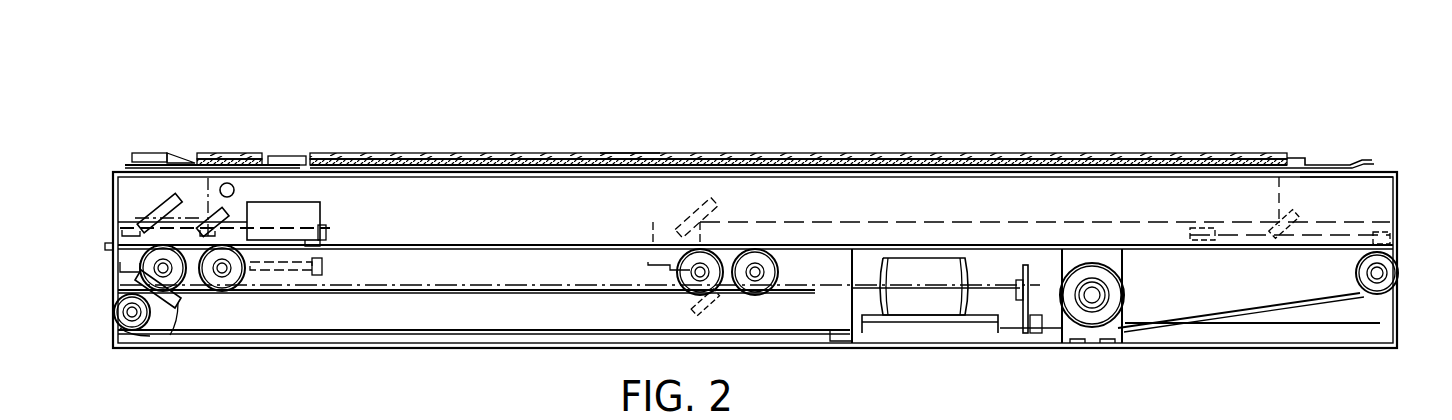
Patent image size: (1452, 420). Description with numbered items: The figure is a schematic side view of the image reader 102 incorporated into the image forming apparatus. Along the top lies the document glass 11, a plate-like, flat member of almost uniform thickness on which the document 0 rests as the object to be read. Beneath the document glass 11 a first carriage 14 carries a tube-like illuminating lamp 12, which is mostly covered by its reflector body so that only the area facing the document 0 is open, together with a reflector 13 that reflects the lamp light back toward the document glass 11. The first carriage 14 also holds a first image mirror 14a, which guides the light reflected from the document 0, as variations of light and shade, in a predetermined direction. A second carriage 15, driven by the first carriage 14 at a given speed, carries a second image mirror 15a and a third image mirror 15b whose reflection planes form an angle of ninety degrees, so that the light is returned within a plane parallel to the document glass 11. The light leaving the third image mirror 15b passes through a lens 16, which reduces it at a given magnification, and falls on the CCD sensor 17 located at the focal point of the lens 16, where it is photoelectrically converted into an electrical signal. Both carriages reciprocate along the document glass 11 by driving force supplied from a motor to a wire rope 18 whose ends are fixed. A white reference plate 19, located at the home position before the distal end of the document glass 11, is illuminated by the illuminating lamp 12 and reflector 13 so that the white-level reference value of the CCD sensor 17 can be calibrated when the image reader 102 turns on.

The document 0 is at (633, 155).
The document glass 11 is at (448, 153).
The illuminating lamp 12 is at (234, 188).
The reflector 13 is at (198, 182).
The first carriage 14 is at (322, 232).
The first image mirror 14a is at (207, 273).
The second carriage 15 is at (287, 267).
The second image mirror 15a is at (162, 203).
The third image mirror 15b is at (176, 306).
The lens 16 is at (880, 318).
The CCD sensor 17 is at (1018, 290).
The wire rope 18 is at (470, 295).
The white reference plate 19 is at (245, 168).
The image reader 102 is at (1330, 198).